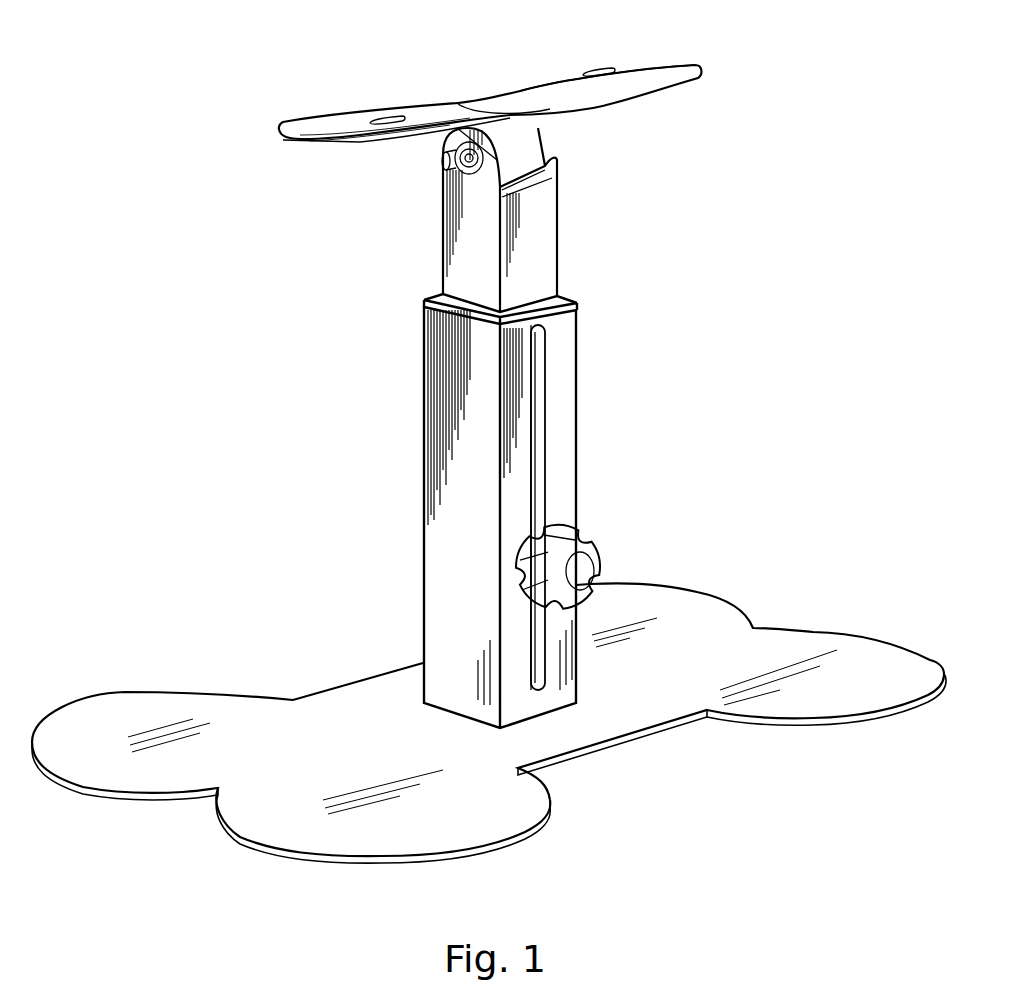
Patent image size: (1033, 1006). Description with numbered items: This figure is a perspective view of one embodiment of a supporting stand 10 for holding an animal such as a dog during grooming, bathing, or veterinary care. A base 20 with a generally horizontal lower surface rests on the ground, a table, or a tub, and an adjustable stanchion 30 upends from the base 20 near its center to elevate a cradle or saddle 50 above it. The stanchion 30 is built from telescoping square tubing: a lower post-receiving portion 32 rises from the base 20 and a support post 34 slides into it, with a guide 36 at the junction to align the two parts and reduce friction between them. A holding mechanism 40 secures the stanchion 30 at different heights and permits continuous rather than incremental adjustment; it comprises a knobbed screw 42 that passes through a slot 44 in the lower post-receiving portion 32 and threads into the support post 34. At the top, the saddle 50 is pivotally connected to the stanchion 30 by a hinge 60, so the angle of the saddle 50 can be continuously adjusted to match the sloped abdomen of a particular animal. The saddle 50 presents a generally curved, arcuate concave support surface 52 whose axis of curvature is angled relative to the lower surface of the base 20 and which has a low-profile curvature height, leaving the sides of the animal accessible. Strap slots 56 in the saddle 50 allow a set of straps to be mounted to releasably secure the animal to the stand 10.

The supporting stand 10 is at (146, 337).
The base 20 is at (330, 705).
The adjustable stanchion 30 is at (343, 200).
The lower post-receiving portion 32 is at (435, 593).
The support post 34 is at (555, 216).
The guide 36 is at (567, 298).
The holding mechanism 40 is at (586, 521).
The knobbed screw 42 is at (600, 548).
The slot 44 is at (547, 420).
The saddle 50 is at (330, 119).
The support surface 52 is at (530, 92).
The strap slots 56 is at (600, 72).
The hinge 60 is at (428, 170).